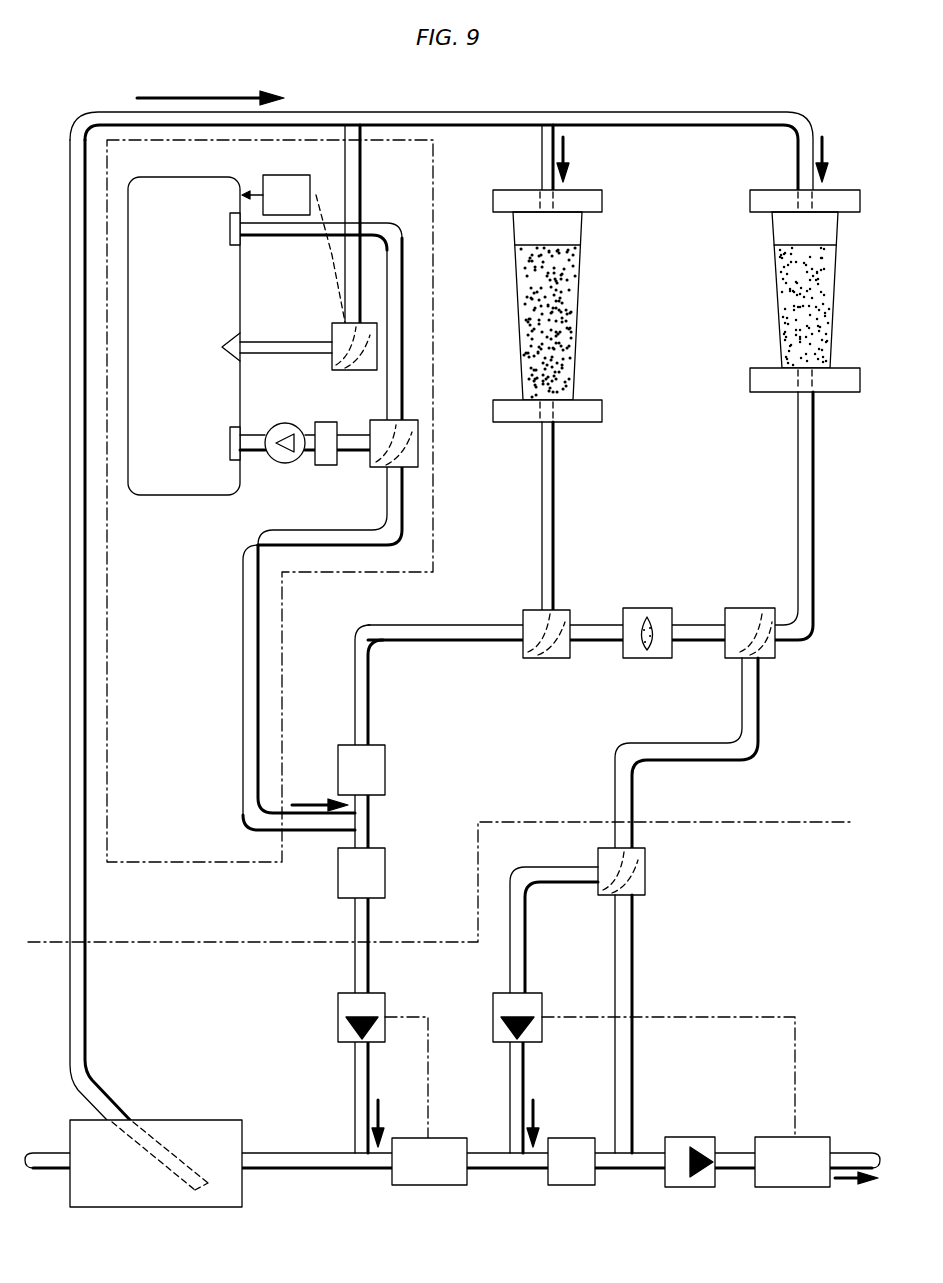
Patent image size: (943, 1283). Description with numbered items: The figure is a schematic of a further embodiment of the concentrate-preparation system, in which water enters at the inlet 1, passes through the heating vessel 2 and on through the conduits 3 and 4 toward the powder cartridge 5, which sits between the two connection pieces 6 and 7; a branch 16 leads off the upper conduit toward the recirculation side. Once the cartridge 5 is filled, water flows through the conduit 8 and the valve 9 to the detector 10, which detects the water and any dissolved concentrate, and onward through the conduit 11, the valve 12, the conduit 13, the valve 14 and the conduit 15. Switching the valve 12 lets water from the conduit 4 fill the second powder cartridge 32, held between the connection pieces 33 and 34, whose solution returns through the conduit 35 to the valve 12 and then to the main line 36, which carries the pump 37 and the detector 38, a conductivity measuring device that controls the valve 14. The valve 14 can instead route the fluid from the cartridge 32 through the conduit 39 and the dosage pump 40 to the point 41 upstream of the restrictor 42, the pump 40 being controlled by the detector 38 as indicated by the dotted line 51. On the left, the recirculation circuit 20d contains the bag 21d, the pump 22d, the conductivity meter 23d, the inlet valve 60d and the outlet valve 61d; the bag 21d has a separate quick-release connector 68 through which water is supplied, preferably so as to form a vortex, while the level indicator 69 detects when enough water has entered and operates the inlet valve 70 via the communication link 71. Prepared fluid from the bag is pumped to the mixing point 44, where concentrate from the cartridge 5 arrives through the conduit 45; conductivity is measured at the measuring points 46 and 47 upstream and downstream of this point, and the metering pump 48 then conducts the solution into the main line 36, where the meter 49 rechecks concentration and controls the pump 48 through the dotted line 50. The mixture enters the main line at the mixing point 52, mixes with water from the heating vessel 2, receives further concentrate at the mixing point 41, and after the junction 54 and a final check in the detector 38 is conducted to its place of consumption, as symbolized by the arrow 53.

The inlet 1 is at (50, 1172).
The heating vessel 2 is at (192, 1120).
The conduit 3 is at (88, 920).
The conduit 4 is at (508, 112).
The powder cartridge 5 is at (576, 338).
The connection piece 6 is at (590, 190).
The connection piece 7 is at (592, 400).
The conduit 8 is at (556, 512).
The valve 9 is at (570, 608).
The detector 10 is at (623, 658).
The conduit 11 is at (693, 625).
The valve 12 is at (755, 608).
The conduit 13 is at (760, 710).
The valve 14 is at (645, 870).
The conduit 15 is at (632, 1078).
The branch line 16 is at (355, 118).
The recirculation circuit 20d is at (95, 593).
The bag 21d is at (128, 340).
The pump 22d is at (278, 422).
The conductivity meter 23d is at (330, 422).
The powder cartridge 32 is at (834, 315).
The connection piece 33 is at (850, 190).
The connection piece 34 is at (850, 368).
The conduit 35 is at (815, 502).
The main line 36 is at (303, 1153).
The pump 37 is at (676, 1187).
The detector 38 is at (787, 1187).
The conduit 39 is at (528, 942).
The dosage pump 40 is at (542, 997).
The mixing point 41 is at (517, 1165).
The restrictor 42 is at (558, 1187).
The mixing point 44 is at (362, 822).
The conduit 45 is at (370, 700).
The measuring point 46 is at (385, 748).
The measuring point 47 is at (338, 880).
The pump 48 is at (385, 997).
The meter 49 is at (418, 1187).
The dotted line 50 is at (430, 1085).
The dotted line 51 is at (795, 1045).
The mixing point 52 is at (362, 1165).
The arrow 53 is at (855, 1153).
The junction 54 is at (625, 1165).
The inlet valve 60d is at (380, 352).
The outlet valve 61d is at (418, 467).
The connector 68 is at (240, 340).
The level indicator 69 is at (287, 175).
The inlet valve 70 is at (342, 318).
The communication link 71 is at (325, 245).